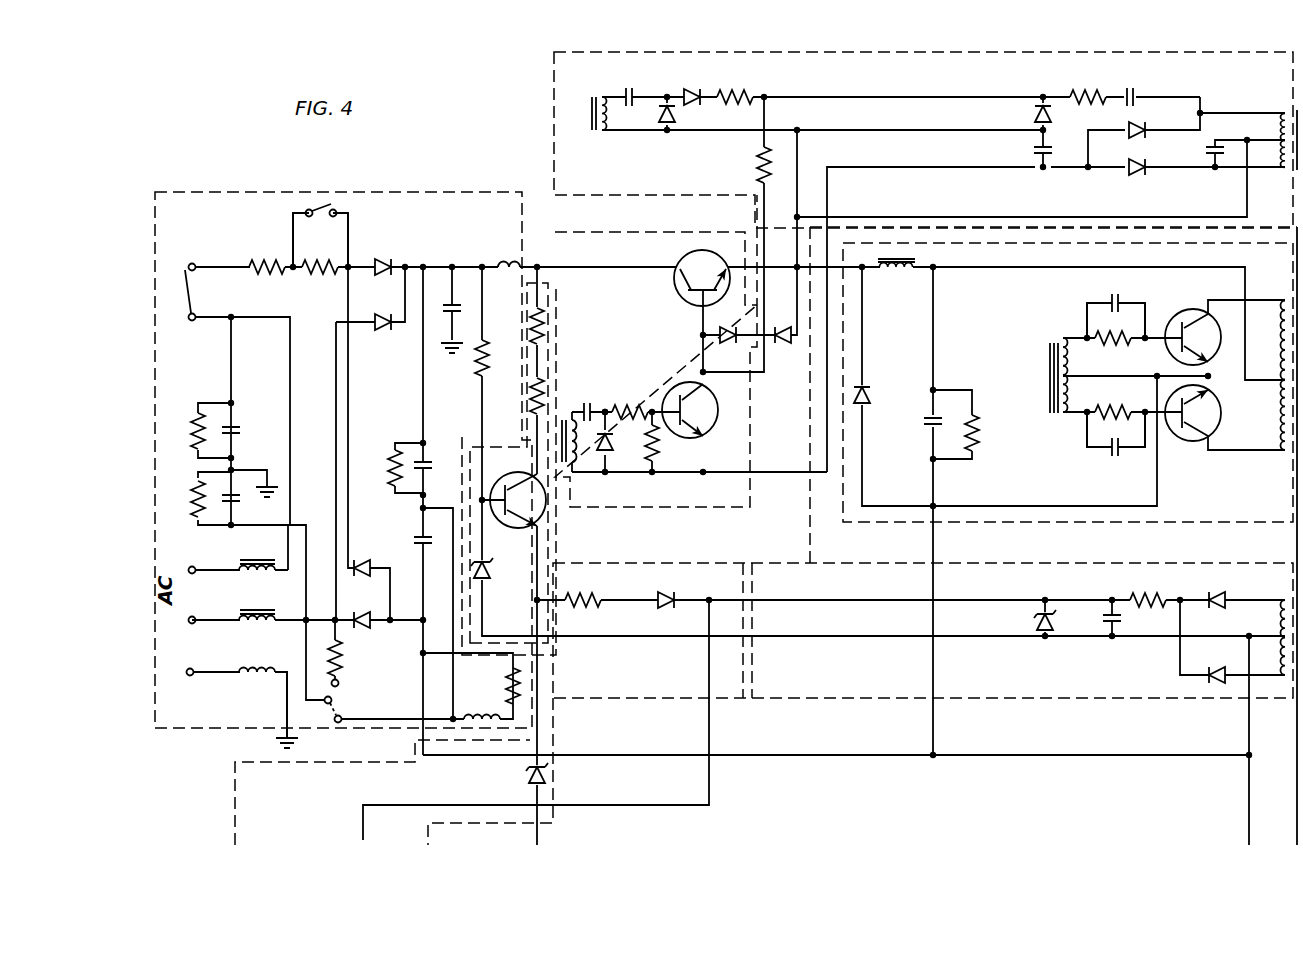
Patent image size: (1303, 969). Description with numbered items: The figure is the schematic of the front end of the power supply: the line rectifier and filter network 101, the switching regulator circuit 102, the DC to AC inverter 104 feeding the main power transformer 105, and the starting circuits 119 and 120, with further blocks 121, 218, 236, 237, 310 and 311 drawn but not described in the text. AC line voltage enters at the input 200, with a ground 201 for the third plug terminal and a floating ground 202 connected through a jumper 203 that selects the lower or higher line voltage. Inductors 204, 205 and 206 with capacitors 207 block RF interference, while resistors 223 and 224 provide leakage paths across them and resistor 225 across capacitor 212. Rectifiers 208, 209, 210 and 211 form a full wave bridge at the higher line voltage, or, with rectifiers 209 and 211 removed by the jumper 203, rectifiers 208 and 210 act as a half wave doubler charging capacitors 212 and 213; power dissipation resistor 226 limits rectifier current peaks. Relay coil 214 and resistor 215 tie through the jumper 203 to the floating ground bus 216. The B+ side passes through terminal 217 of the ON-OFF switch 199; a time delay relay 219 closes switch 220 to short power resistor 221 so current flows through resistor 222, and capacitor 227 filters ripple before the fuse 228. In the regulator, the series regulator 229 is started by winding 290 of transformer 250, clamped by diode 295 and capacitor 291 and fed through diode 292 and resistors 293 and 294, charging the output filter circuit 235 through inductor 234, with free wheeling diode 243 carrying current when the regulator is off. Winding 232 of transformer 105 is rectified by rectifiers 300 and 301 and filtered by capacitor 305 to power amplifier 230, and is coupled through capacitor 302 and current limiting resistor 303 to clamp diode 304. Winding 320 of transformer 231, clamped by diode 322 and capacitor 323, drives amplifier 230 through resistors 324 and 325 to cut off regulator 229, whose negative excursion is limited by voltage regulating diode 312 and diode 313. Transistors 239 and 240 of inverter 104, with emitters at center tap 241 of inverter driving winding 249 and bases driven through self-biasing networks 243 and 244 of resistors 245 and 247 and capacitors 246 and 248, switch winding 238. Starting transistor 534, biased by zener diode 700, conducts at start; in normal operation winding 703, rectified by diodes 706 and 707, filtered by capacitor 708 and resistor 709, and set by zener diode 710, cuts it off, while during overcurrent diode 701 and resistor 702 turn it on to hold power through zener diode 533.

The line rectifier and filter network 101 is at (440, 192).
The switching regulator circuit 102 is at (742, 508).
The DC to AC inverter 104 is at (845, 515).
The main power transformer 105 is at (1290, 105).
The starting circuit 119 is at (553, 818).
The starting circuit 120 is at (758, 52).
The circuit block 121 is at (835, 700).
The ON-OFF switch 199 is at (212, 266).
The input 200 is at (190, 617).
The ground 201 is at (287, 712).
The floating ground 202 is at (220, 616).
The jumper 203 is at (343, 702).
The inductor 204 is at (242, 566).
The inductor 205 is at (272, 615).
The inductor 206 is at (248, 668).
The capacitors 207 is at (245, 475).
The rectifier 208 is at (386, 262).
The rectifier 209 is at (385, 332).
The rectifier 210 is at (361, 559).
The rectifier 211 is at (360, 611).
The capacitor 212 is at (428, 458).
The capacitor 213 is at (414, 542).
The relay coil 214 is at (476, 698).
The resistor 215 is at (505, 680).
The bus 216 is at (598, 755).
The terminal 217 is at (198, 316).
The terminal 218 is at (194, 262).
The time delay relay 219 is at (335, 226).
The switch 220 is at (303, 210).
The power resistor 221 is at (320, 273).
The resistor 222 is at (265, 272).
The resistor 223 is at (196, 415).
The resistor 224 is at (196, 495).
The resistor 225 is at (390, 465).
The power dissipation resistor 226 is at (346, 660).
The capacitor 227 is at (455, 300).
The fuse 228 is at (511, 262).
The series regulator 229 is at (680, 255).
The amplifier 230 is at (716, 440).
The transformer 231 is at (561, 400).
The winding 232 is at (1283, 115).
The inductor 234 is at (905, 272).
The output filter circuit 235 is at (950, 418).
The resistor 236 is at (980, 425).
The transformer winding 237 is at (1282, 390).
The winding 238 is at (1282, 340).
The transistor 239 is at (1178, 312).
The transistor 240 is at (1186, 445).
The center tap 241 is at (1068, 376).
The free wheeling diode 243 is at (868, 392).
The self-biasing network 244 is at (1131, 455).
The resistor 245 is at (1120, 345).
The capacitor 246 is at (1110, 300).
The resistor 247 is at (1105, 410).
The capacitor 248 is at (1108, 455).
The inverter driving winding 249 is at (1058, 416).
The transformer 250 is at (598, 96).
The winding 290 is at (606, 130).
The capacitor 291 is at (633, 88).
The diode 292 is at (690, 89).
The resistor 293 is at (740, 88).
The resistor 294 is at (756, 165).
The diode 295 is at (670, 120).
The rectifier 300 is at (1126, 125).
The rectifier 301 is at (1135, 172).
The capacitor 302 is at (1131, 92).
The current limiting resistor 303 is at (1088, 92).
The clamp diode 304 is at (1036, 110).
The capacitor 305 is at (1035, 150).
The transformer winding 310 is at (1283, 165).
The line 311 is at (898, 167).
The voltage regulating diode 312 is at (723, 330).
The diode 313 is at (786, 344).
The winding 320 is at (585, 403).
The diode 322 is at (612, 460).
The capacitor 323 is at (606, 408).
The resistor 324 is at (630, 405).
The resistor 325 is at (658, 460).
The zener diode 533 is at (528, 770).
The starting transistor 534 is at (514, 514).
The zener diode 700 is at (492, 566).
The diode 701 is at (672, 592).
The resistor 702 is at (588, 596).
The winding 703 is at (1280, 610).
The diode 706 is at (1212, 597).
The diode 707 is at (1212, 683).
The capacitor 708 is at (1106, 625).
The resistor 709 is at (1145, 598).
The zener diode 710 is at (1036, 630).